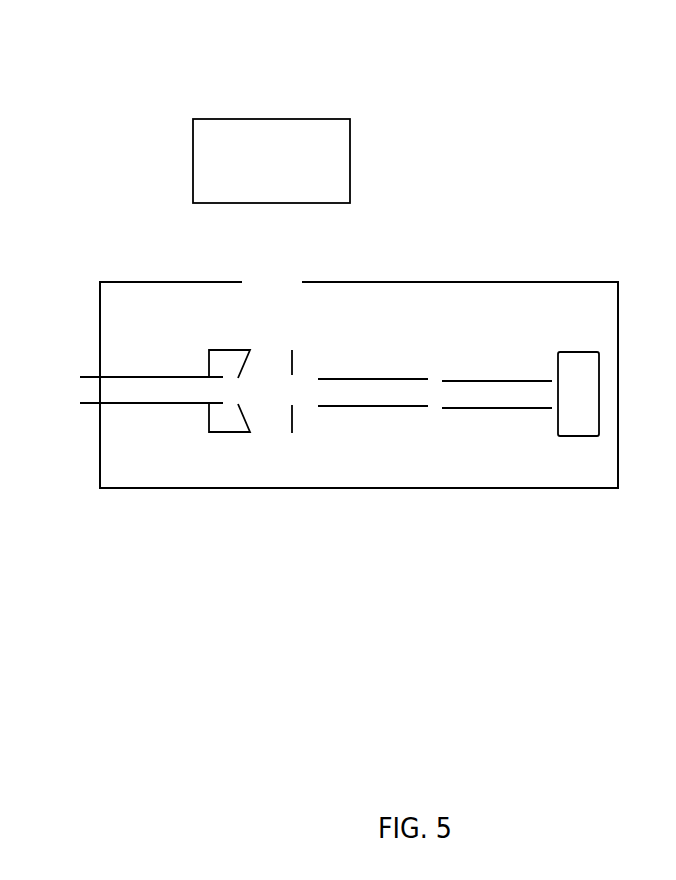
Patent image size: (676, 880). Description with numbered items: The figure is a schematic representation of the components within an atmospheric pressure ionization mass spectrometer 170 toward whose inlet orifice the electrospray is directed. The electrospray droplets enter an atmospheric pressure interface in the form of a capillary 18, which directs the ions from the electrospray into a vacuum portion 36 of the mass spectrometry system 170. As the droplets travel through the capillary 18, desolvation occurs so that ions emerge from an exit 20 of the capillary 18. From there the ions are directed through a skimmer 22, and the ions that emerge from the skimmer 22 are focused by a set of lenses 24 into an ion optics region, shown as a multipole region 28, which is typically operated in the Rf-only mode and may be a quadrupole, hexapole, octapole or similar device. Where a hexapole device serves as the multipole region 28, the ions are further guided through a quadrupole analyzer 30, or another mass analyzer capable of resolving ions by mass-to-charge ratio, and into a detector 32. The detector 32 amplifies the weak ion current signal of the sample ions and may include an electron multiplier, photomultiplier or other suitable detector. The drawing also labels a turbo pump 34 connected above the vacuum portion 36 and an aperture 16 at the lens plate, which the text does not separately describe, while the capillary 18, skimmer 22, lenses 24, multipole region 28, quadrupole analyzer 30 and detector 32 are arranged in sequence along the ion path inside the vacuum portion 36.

The mass spectrometer 170 is at (133, 100).
The turbo pump 34 is at (342, 178).
The vacuum portion 36 is at (359, 385).
The capillary 18 is at (147, 387).
The skimmer 22 is at (245, 366).
The exit 20 is at (237, 388).
The set of lenses 24 is at (293, 363).
The aperture 16 is at (288, 388).
The multipole region 28 is at (358, 388).
The quadrupole analyzer 30 is at (477, 388).
The detector 32 is at (570, 362).